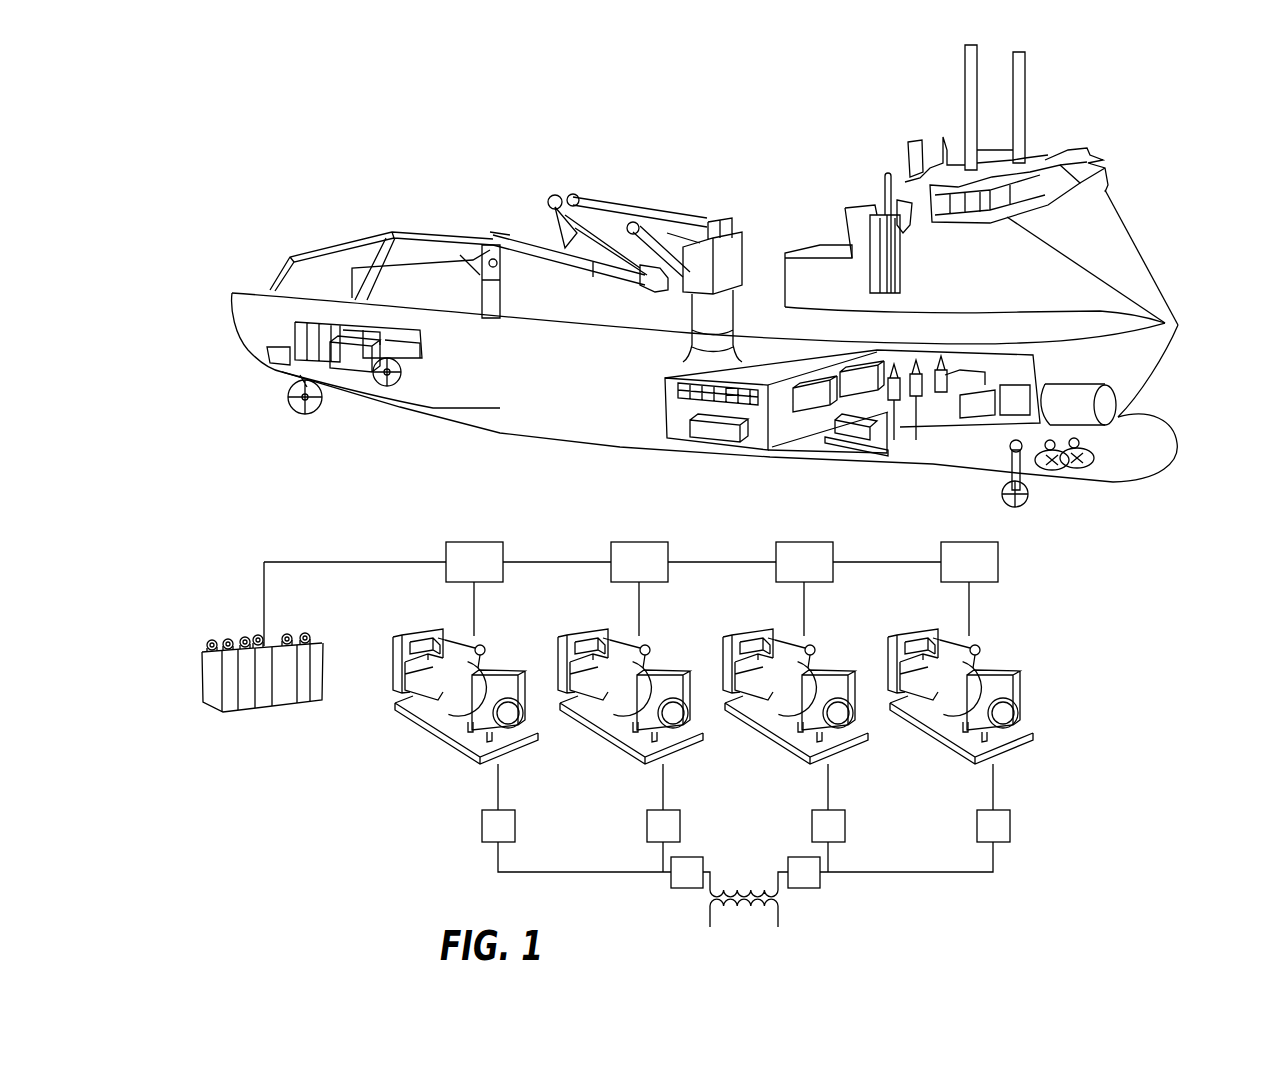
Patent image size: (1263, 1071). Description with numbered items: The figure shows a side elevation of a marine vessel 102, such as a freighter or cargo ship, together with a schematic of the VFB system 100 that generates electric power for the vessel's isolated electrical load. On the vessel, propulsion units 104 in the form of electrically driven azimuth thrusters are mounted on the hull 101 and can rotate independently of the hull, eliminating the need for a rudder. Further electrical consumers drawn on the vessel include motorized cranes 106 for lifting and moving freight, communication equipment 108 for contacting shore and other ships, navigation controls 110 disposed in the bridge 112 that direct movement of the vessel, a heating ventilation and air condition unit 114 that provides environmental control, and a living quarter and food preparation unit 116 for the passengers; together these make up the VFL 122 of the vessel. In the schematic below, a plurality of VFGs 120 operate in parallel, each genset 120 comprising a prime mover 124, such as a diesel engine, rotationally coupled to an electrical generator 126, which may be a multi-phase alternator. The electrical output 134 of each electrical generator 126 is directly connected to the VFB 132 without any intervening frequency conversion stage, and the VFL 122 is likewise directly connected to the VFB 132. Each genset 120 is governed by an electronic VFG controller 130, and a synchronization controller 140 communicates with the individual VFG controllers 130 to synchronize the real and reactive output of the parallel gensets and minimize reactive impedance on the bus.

The VFB system 100 is at (813, 446).
The hull 101 is at (1160, 364).
The marine vessel 102 is at (757, 168).
The propulsion unit 104 is at (292, 394).
The motorized crane 106 is at (455, 243).
The communication equipment 108 is at (972, 92).
The navigation controls 110 is at (1045, 184).
The bridge 112 is at (1110, 173).
The heating ventilation and air condition unit 114 is at (710, 435).
The living quarter and food preparation unit 116 is at (420, 337).
The VFG 120 is at (734, 697).
The VFL 122 is at (710, 916).
The prime mover 124 is at (741, 639).
The electrical generator 126 is at (1108, 408).
The VFG controller 130 is at (722, 562).
The VFB 132 is at (918, 874).
The electrical output 134 is at (482, 826).
The synchronization controller 140 is at (277, 712).